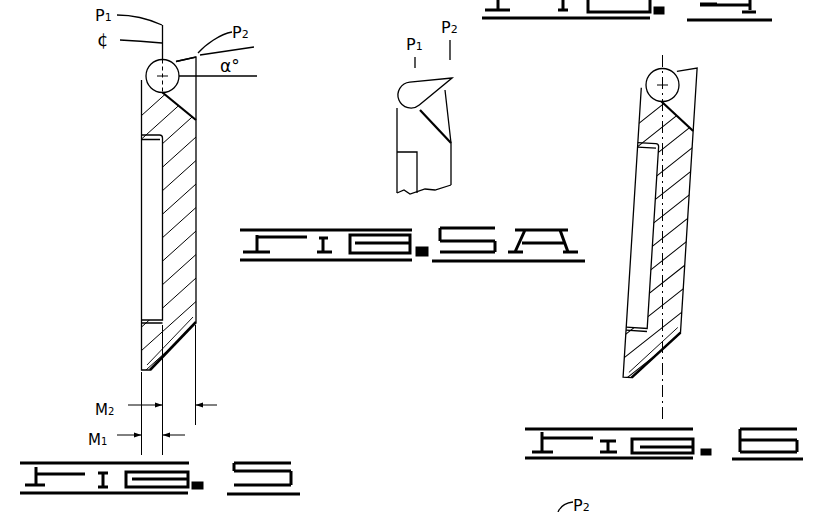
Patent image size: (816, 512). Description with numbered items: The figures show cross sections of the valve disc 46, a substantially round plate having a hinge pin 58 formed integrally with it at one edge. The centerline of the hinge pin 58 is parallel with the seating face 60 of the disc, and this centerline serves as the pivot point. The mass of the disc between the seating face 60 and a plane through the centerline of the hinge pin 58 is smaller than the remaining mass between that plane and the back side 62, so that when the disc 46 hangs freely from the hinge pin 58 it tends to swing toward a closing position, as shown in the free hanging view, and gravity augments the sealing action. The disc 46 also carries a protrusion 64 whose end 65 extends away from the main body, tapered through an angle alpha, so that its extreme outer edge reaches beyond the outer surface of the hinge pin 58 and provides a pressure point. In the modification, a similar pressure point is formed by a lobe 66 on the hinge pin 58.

In FIG. 5, the valve disc 46 is at (185, 198).
In FIG. 5A, the valve disc 46 is at (435, 170).
In FIG. 6, the valve disc 46 is at (695, 175).
In FIG. 5, the hinge pin 58 is at (148, 72).
In FIG. 5A, the hinge pin 58 is at (410, 97).
In FIG. 5, the seating face 60 is at (141, 335).
In FIG. 5, the back side 62 is at (197, 304).
In FIG. 5, the protrusion 64 is at (187, 95).
In FIG. 5, the end of the protrusion 65 is at (183, 55).
In FIG. 5A, the lobe 66 is at (453, 80).